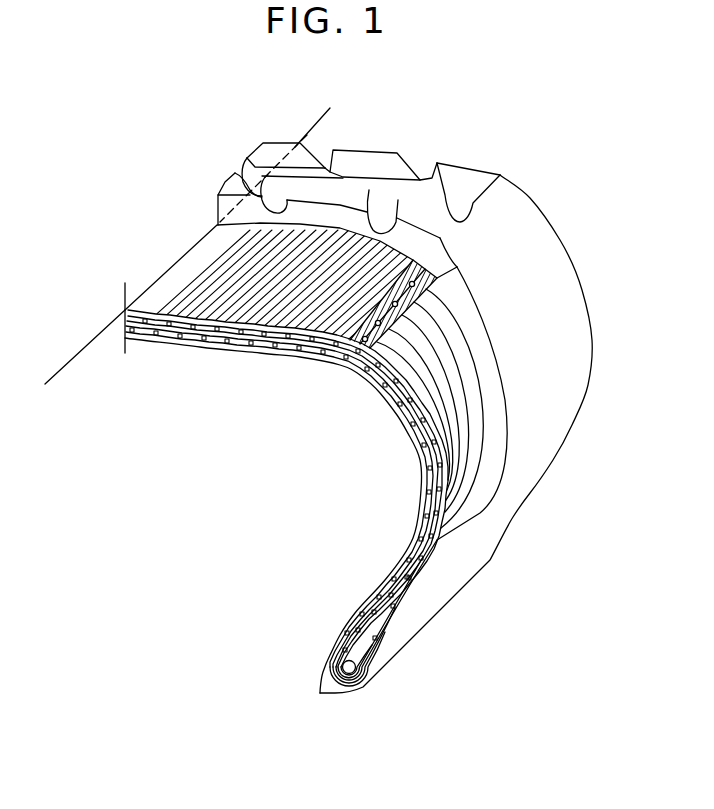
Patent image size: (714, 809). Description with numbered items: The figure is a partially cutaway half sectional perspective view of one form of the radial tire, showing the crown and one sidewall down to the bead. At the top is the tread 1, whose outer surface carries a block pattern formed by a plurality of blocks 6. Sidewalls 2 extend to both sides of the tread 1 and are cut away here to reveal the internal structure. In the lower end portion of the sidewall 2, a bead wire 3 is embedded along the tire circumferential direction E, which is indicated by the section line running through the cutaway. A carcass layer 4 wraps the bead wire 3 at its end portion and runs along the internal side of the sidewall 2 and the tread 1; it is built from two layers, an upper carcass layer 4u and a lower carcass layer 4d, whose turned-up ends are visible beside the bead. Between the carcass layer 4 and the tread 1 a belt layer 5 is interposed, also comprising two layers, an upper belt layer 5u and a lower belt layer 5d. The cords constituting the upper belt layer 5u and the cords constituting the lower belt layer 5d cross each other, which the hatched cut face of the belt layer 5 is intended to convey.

The tread 1 is at (375, 152).
The sidewalls 2 is at (553, 428).
The bead wires 3 is at (344, 663).
The carcass layer 4 is at (413, 538).
The lower carcass layer 4d is at (430, 494).
The upper carcass layer 4u is at (445, 482).
The belt layer 5 is at (182, 247).
The upper belt layer 5u is at (150, 311).
The lower belt layer 5d is at (153, 322).
The blocks 6 is at (466, 168).
The tire circumferential direction E is at (188, 252).